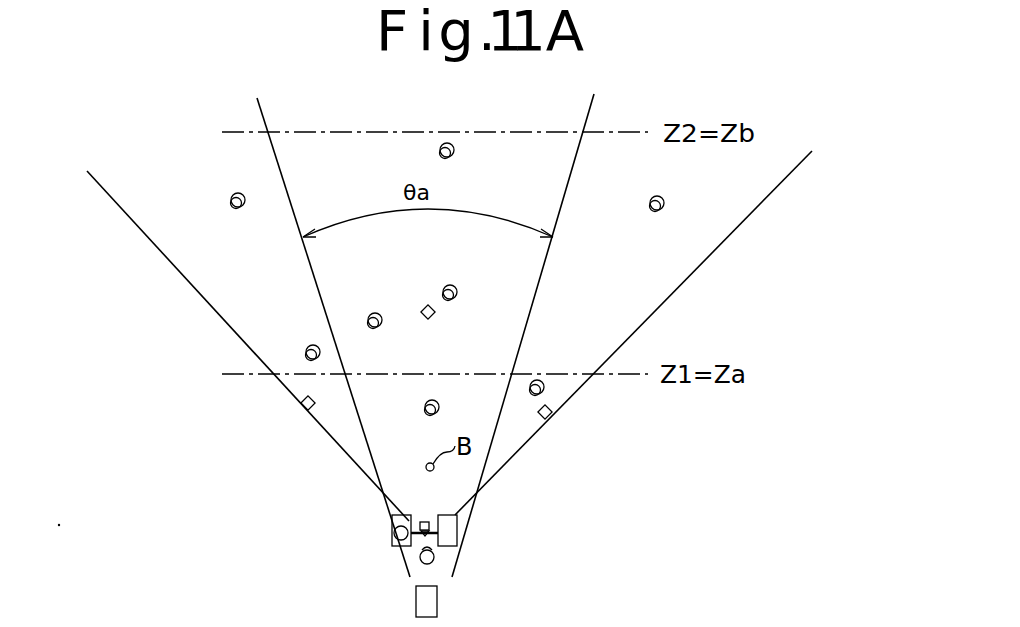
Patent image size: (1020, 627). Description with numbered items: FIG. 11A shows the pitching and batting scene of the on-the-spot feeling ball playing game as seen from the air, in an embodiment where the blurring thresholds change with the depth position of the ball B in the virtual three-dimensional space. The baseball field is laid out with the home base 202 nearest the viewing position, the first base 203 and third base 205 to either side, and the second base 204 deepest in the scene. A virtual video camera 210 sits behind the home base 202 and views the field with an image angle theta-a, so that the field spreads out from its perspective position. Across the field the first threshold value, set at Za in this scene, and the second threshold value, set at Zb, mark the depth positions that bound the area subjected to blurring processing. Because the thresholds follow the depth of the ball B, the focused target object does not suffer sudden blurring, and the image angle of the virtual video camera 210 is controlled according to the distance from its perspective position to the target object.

The home base 202 is at (424, 522).
The first base 203 is at (549, 418).
The second base 204 is at (432, 318).
The third base 205 is at (305, 410).
The virtual video camera 210 is at (437, 602).